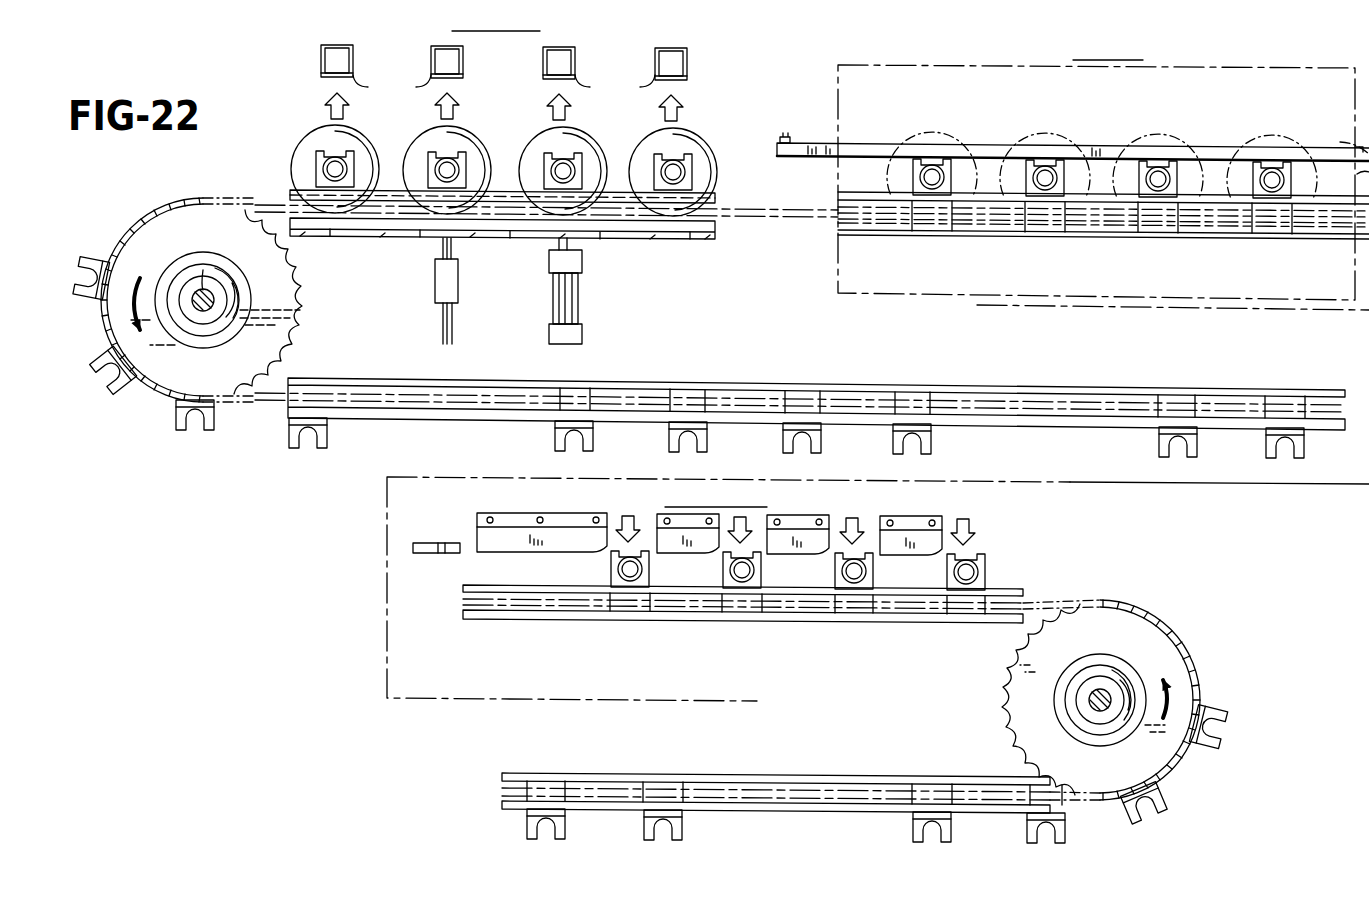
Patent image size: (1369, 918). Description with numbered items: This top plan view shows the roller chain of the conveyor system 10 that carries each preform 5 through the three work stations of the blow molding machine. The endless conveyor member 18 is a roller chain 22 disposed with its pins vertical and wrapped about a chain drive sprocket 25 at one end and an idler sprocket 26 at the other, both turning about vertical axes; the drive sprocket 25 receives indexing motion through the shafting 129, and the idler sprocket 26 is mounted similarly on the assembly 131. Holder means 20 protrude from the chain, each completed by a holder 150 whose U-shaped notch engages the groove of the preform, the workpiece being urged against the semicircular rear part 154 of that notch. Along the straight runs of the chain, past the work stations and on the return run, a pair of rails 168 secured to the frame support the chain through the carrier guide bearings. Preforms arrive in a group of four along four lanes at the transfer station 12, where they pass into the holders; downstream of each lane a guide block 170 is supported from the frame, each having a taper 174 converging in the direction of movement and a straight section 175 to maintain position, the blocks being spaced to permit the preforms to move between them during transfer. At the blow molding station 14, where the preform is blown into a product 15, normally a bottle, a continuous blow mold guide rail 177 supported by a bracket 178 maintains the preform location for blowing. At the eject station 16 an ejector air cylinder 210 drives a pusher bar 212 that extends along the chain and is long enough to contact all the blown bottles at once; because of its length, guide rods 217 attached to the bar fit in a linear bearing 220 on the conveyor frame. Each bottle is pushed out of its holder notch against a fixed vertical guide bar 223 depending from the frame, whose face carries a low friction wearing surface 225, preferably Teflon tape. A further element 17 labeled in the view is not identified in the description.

The preform 5 is at (723, 568).
The conveyor system 10 is at (287, 513).
The transfer station 12 is at (995, 527).
The blow molding station 14 is at (830, 80).
The product 15 is at (410, 149).
The eject station 16 is at (318, 115).
The mold section 17 is at (1362, 131).
The endless conveyor member 18 is at (1188, 632).
The holder means 20 is at (695, 163).
The roller chain 22 is at (182, 205).
The chain drive sprocket 25 is at (300, 306).
The idler sprocket 26 is at (1010, 657).
The shafting 129 is at (203, 297).
The assembly 131 is at (1101, 698).
The holder 150 is at (318, 168).
The semicircular rear part of the notch 154 is at (918, 432).
The rails 168 is at (805, 200).
The guide blocks 170 is at (575, 537).
The taper 174 is at (925, 545).
The straight section 175 is at (772, 553).
The blow mold guide rail 177 is at (868, 148).
The bracket 178 is at (790, 133).
The ejector air cylinder 210 is at (580, 297).
The pusher bar 212 is at (670, 237).
The guide rods 217 is at (452, 323).
The linear bearing 220 is at (458, 286).
The fixed vertical guide bar 223 is at (430, 55).
The low friction wearing surface 225 is at (432, 80).